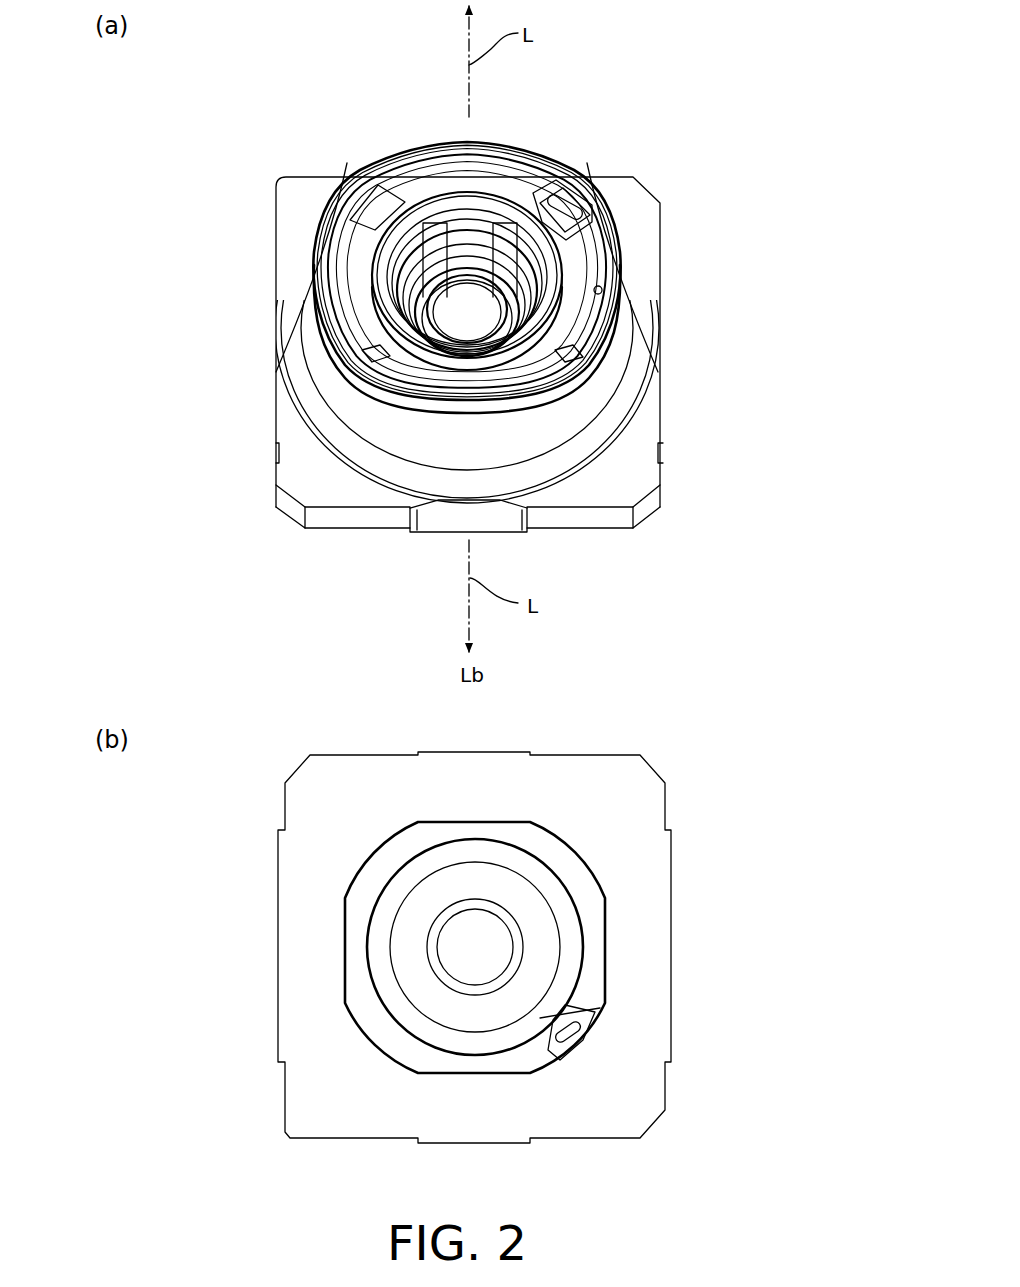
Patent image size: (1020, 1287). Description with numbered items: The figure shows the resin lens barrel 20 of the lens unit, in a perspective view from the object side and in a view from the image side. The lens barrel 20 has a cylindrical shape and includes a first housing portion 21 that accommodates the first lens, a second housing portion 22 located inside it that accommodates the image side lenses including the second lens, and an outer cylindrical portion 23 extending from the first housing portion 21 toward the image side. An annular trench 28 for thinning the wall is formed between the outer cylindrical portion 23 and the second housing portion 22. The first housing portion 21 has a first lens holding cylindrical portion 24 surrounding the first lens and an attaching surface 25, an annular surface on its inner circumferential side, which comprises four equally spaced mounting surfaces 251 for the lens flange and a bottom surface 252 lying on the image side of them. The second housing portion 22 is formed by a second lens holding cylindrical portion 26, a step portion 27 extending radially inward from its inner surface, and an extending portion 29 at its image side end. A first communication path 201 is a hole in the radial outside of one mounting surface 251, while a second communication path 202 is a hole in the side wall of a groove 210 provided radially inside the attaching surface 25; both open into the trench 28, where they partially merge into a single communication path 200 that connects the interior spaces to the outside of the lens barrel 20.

The lens barrel 20 is at (690, 125).
The first housing portion 21 is at (453, 238).
The second housing portion 22 is at (509, 602).
The outer cylindrical portion 23 is at (597, 396).
The first lens holding cylindrical portion 24 is at (381, 199).
The attaching surface 25 is at (352, 247).
The second lens holding cylindrical portion 26 is at (420, 283).
The step portion 27 is at (440, 305).
The annular trench 28 is at (592, 925).
The extending portion 29 is at (467, 335).
The communication path 200 is at (590, 1007).
The first communication path 201 is at (580, 177).
The second communication path 202 is at (533, 218).
The groove 210 is at (367, 307).
The mounting surface 251 is at (381, 203).
The bottom surface 252 is at (473, 178).